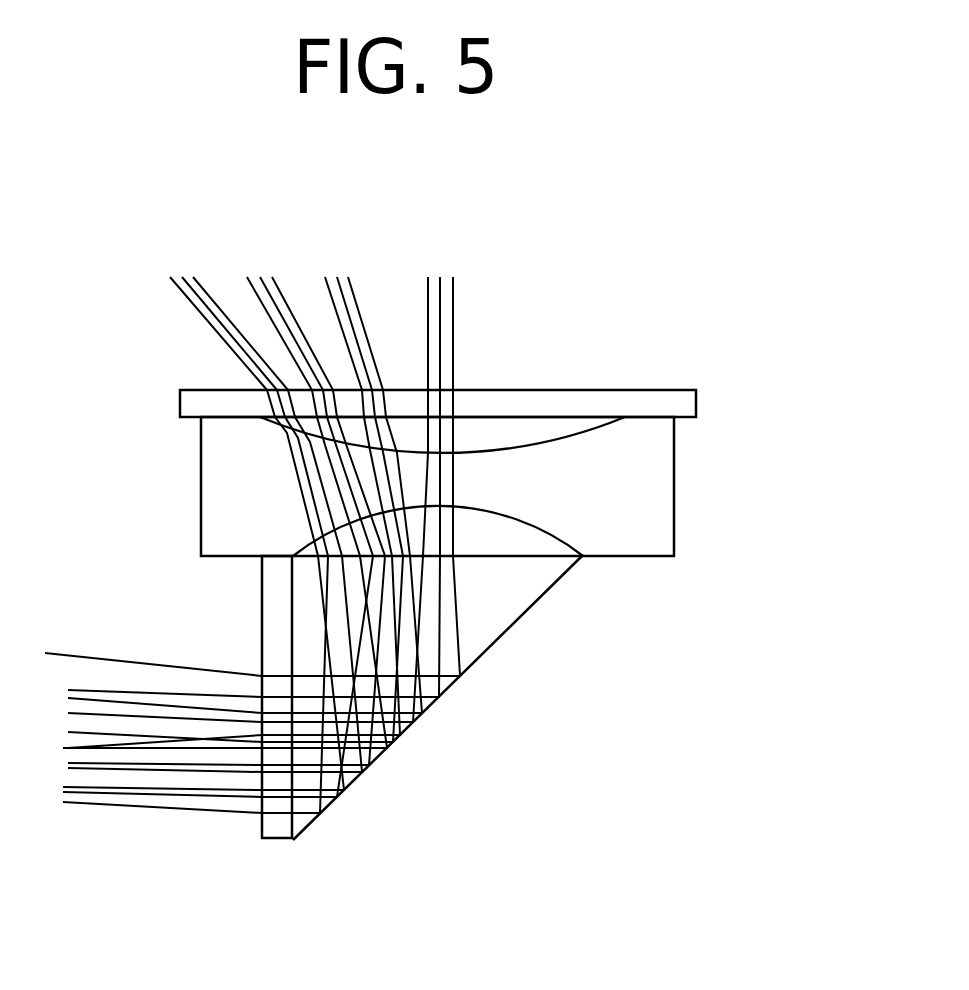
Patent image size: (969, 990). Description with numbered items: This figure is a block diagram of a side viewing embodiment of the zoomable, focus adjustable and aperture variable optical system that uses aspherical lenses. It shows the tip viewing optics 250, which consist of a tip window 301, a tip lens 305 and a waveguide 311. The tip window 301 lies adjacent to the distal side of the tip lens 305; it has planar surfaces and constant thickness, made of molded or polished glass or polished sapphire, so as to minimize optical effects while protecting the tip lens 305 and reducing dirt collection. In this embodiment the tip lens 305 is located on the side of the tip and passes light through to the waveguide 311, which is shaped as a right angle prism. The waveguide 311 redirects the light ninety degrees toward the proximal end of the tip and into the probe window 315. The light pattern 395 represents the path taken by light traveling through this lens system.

The tip viewing optics 250 is at (453, 625).
The tip window 301 is at (558, 390).
The tip lens 305 is at (201, 488).
The waveguide 311 is at (490, 650).
The probe window 315 is at (272, 840).
The light pattern 395 is at (140, 810).